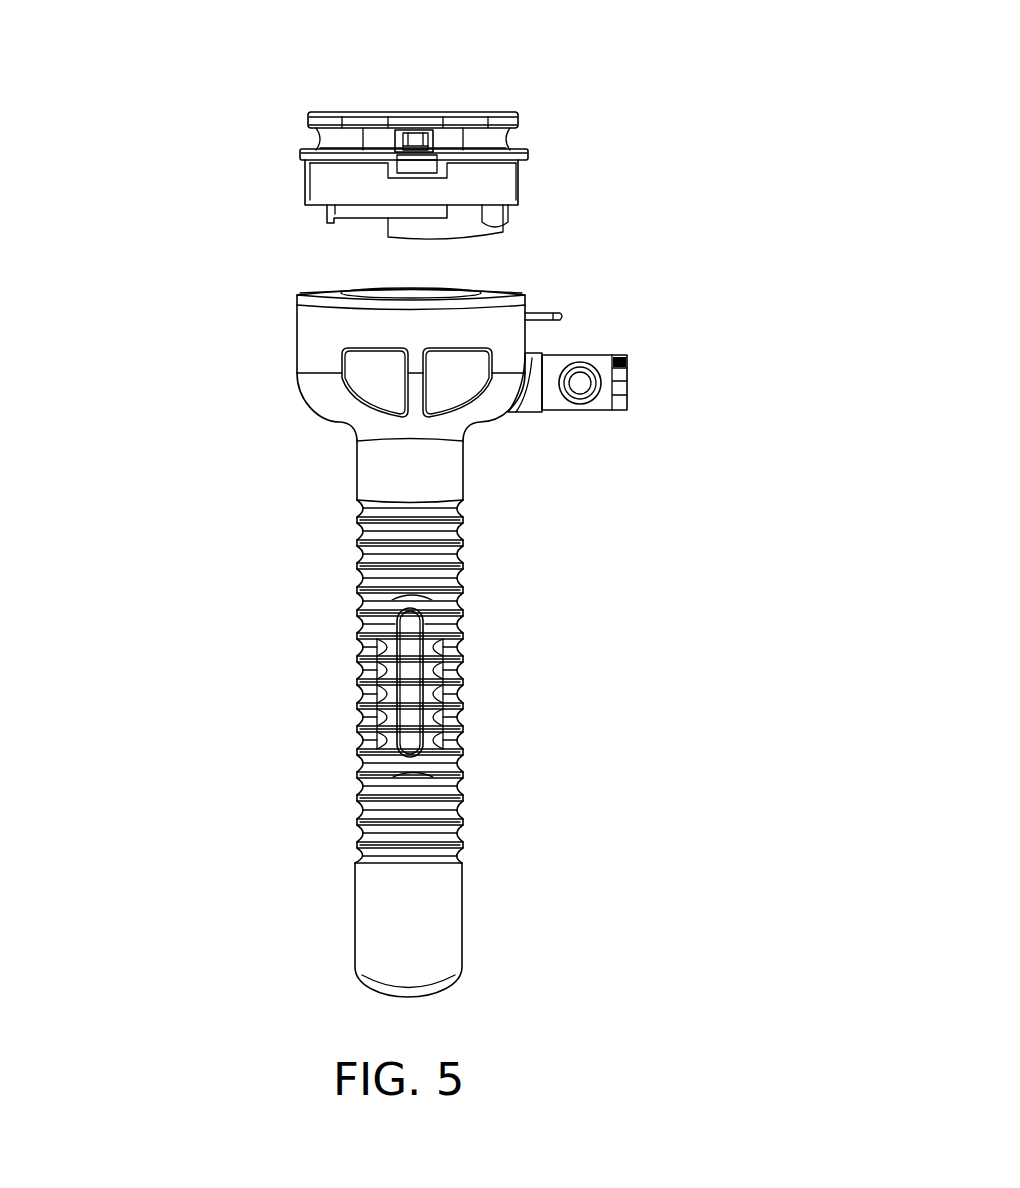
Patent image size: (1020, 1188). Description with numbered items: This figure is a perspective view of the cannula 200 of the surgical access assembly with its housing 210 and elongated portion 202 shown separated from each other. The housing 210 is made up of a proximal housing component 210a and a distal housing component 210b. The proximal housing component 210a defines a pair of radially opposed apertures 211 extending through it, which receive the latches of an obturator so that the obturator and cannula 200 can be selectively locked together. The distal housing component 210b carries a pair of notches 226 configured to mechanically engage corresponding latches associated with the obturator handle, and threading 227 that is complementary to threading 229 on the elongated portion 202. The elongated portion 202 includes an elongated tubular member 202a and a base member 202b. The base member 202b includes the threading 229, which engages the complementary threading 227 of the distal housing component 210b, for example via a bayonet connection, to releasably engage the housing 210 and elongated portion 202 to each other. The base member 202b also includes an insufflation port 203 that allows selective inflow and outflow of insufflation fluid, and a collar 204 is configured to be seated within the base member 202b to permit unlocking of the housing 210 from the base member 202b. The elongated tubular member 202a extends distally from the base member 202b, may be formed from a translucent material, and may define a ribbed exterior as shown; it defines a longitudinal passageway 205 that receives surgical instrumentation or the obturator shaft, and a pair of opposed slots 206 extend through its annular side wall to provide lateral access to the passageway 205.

The cannula 200 is at (640, 111).
The elongated portion 202 is at (217, 472).
The elongated tubular member 202a is at (447, 812).
The base member 202b is at (327, 397).
The insufflation port 203 is at (627, 362).
The collar 204 is at (513, 342).
The longitudinal passageway 205 is at (420, 295).
The slots 206 is at (410, 687).
The housing 210 is at (295, 95).
The proximal housing component 210a is at (518, 120).
The distal housing component 210b is at (503, 185).
The apertures 211 is at (417, 138).
The notches 226 is at (433, 180).
The threading 227 is at (327, 223).
The threading 229 is at (330, 290).